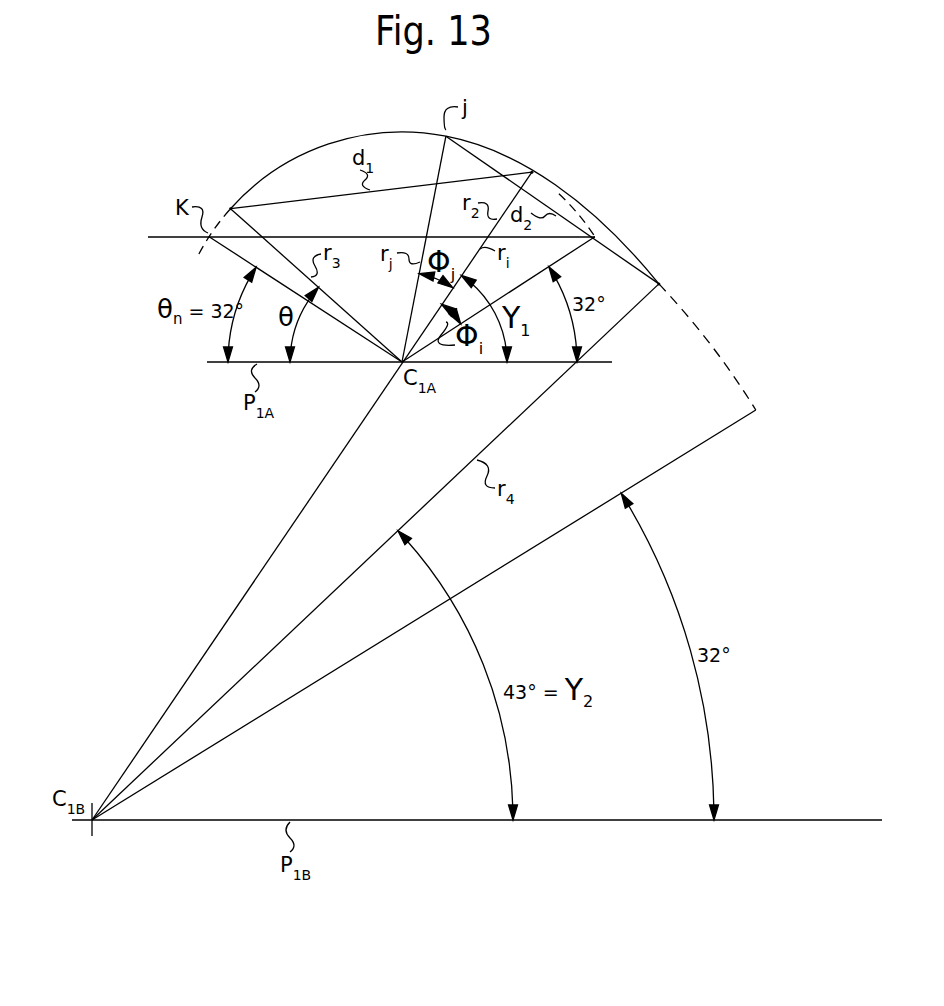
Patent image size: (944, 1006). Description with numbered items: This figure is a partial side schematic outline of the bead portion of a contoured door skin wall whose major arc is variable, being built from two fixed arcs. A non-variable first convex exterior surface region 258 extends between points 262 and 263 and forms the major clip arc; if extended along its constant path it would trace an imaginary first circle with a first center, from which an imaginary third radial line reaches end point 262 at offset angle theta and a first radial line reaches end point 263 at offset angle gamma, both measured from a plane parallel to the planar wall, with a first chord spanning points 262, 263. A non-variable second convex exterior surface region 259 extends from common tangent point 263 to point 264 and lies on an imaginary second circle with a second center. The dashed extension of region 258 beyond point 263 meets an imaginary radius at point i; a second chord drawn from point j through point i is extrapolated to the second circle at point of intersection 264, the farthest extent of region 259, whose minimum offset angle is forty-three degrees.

The first convex exterior surface region 258 is at (283, 170).
The second convex exterior surface region 259 is at (586, 208).
The end point 262 is at (226, 206).
The common tangent point 263 is at (533, 170).
The point of intersection 264 is at (660, 282).